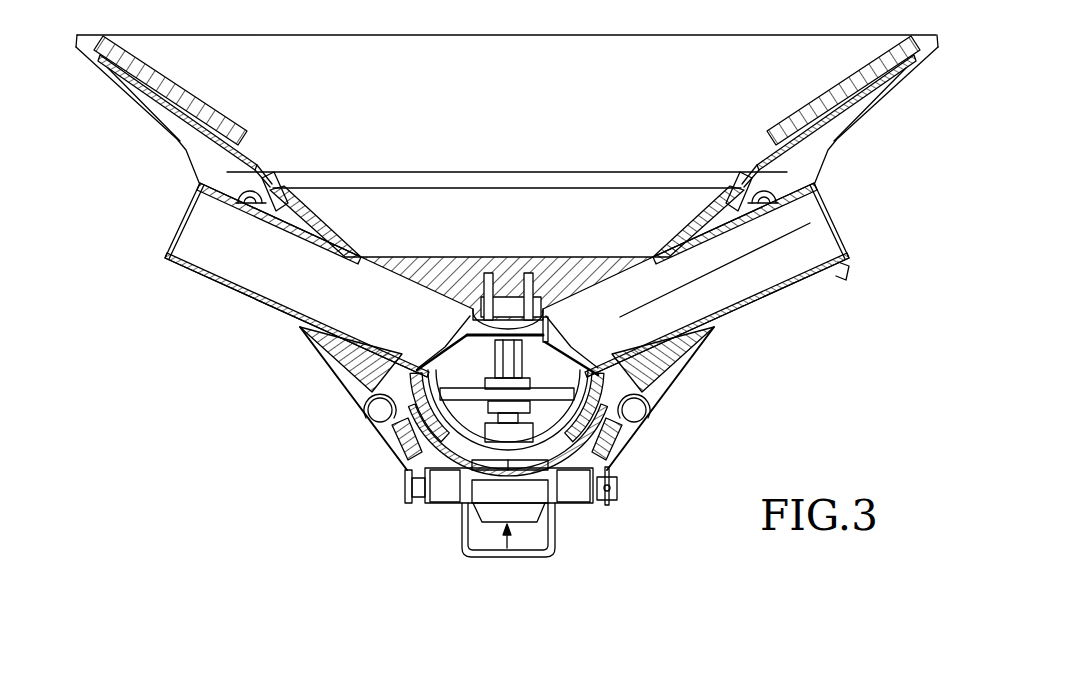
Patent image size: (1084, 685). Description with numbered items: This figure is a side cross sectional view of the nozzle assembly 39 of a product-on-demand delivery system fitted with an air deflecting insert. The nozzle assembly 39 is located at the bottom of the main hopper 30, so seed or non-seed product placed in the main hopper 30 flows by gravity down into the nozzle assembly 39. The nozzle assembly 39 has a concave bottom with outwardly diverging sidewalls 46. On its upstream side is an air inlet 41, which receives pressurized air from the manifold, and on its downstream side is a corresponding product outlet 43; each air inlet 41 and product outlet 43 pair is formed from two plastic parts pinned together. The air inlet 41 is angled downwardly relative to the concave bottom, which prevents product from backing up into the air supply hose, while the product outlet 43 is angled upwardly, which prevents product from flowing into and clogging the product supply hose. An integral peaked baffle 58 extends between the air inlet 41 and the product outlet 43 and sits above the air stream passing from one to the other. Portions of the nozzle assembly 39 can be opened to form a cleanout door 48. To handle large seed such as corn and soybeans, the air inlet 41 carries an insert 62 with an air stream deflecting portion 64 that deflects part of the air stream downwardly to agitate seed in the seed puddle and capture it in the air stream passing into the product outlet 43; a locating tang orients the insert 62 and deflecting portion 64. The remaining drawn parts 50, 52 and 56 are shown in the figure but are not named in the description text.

The main hopper 30 is at (494, 119).
The nozzle assembly 39 is at (258, 426).
The air inlet 41 is at (768, 290).
The product outlet 43 is at (242, 275).
The outwardly diverging sidewalls 46 is at (258, 170).
The cleanout door 48 is at (460, 482).
The pin 50 is at (418, 507).
The clamp bracket 52 is at (507, 552).
The bracket arm 56 is at (405, 452).
The baffle 58 is at (497, 258).
The insert 62 is at (808, 223).
The air stream deflecting portion 64 is at (548, 326).